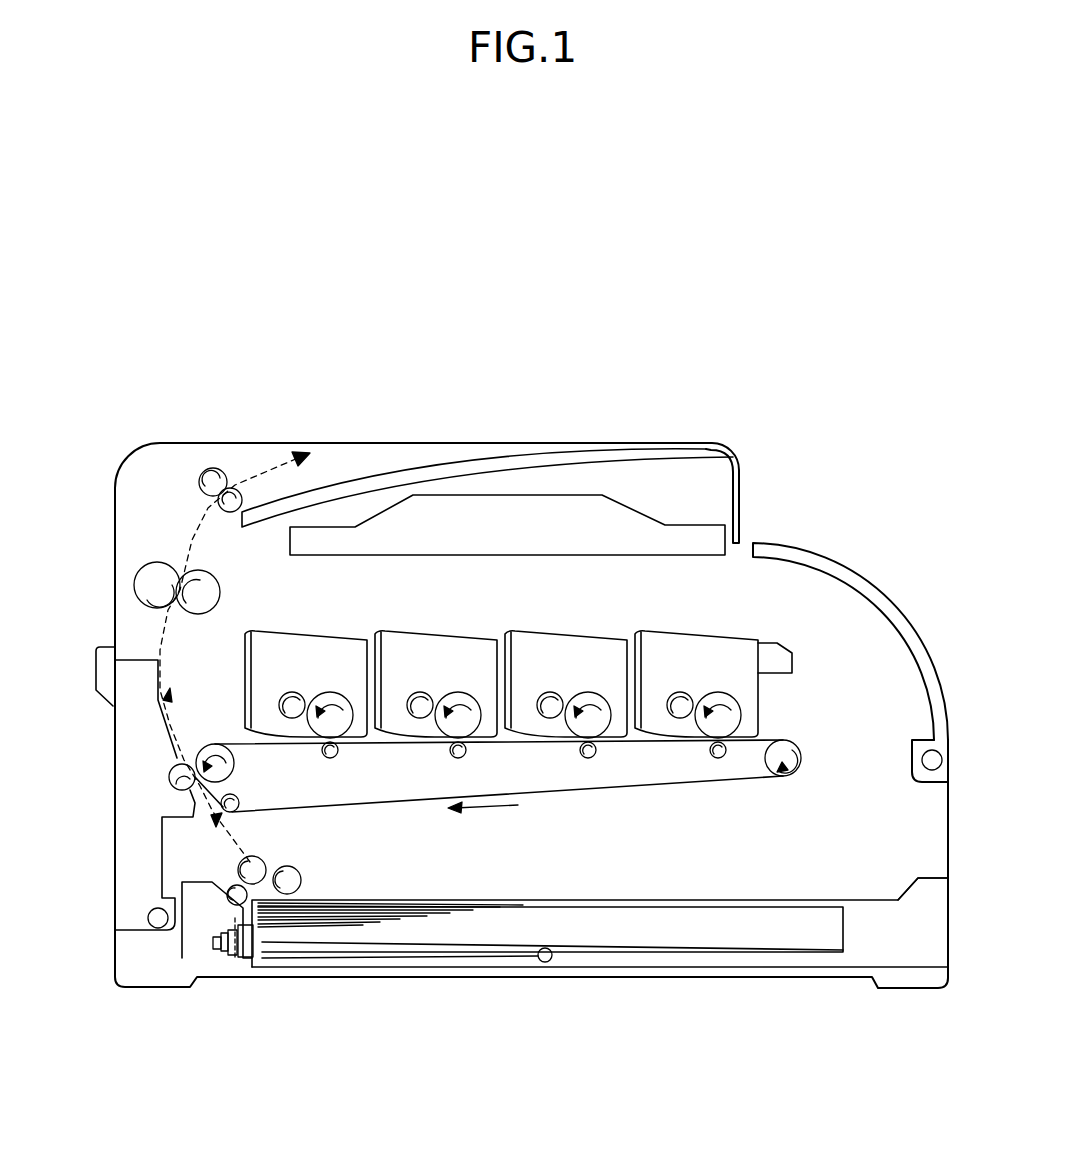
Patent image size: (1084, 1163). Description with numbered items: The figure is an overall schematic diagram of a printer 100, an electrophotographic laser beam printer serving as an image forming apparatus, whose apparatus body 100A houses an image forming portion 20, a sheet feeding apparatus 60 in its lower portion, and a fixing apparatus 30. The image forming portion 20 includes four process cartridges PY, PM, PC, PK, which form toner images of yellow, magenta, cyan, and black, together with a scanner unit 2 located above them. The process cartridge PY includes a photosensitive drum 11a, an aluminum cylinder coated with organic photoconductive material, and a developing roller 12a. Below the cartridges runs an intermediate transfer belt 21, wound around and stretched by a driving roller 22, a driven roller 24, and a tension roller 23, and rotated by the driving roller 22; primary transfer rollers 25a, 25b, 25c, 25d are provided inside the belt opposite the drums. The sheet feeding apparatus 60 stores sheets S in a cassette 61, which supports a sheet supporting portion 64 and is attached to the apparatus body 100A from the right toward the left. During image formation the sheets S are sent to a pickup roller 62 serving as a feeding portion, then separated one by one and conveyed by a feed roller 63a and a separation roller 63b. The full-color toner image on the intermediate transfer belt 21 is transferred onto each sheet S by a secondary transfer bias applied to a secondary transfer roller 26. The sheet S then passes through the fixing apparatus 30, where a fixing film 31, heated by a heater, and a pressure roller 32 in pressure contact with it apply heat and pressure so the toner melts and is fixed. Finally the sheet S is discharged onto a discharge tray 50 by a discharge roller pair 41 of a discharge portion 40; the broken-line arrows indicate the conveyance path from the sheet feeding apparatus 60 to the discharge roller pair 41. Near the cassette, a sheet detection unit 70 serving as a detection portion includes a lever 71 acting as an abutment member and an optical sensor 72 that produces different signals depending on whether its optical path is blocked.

The printer 100 is at (521, 355).
The apparatus body 100A is at (712, 450).
The scanner unit 2 is at (527, 505).
The image forming portion 20 is at (822, 608).
The intermediate transfer belt 21 is at (562, 795).
The driving roller 22 is at (215, 752).
The tension roller 23 is at (238, 806).
The driven roller 24 is at (790, 778).
The primary transfer roller 25a is at (322, 752).
The primary transfer roller 25b is at (450, 752).
The primary transfer roller 25c is at (580, 752).
The primary transfer roller 25d is at (710, 752).
The secondary transfer roller 26 is at (170, 780).
The fixing apparatus 30 is at (122, 605).
The fixing film 31 is at (215, 595).
The pressure roller 32 is at (140, 580).
The discharge portion 40 is at (232, 452).
The discharge roller pair 41 is at (212, 470).
The discharge tray 50 is at (430, 462).
The sheet feeding apparatus 60 is at (391, 892).
The cassette 61 is at (885, 910).
The pickup roller 62 is at (302, 880).
The feed roller 63a is at (265, 862).
The separation roller 63b is at (227, 900).
The sheet supporting portion 64 is at (345, 947).
The sheet detection unit 70 is at (214, 922).
The lever 71 is at (233, 960).
The optical sensor 72 is at (213, 943).
The sheet S is at (495, 937).
The process cartridge PY is at (312, 657).
The process cartridge PM is at (463, 670).
The process cartridge PC is at (593, 670).
The process cartridge PK is at (723, 670).
The photosensitive drum 11a is at (331, 715).
The developing roller 12a is at (283, 700).